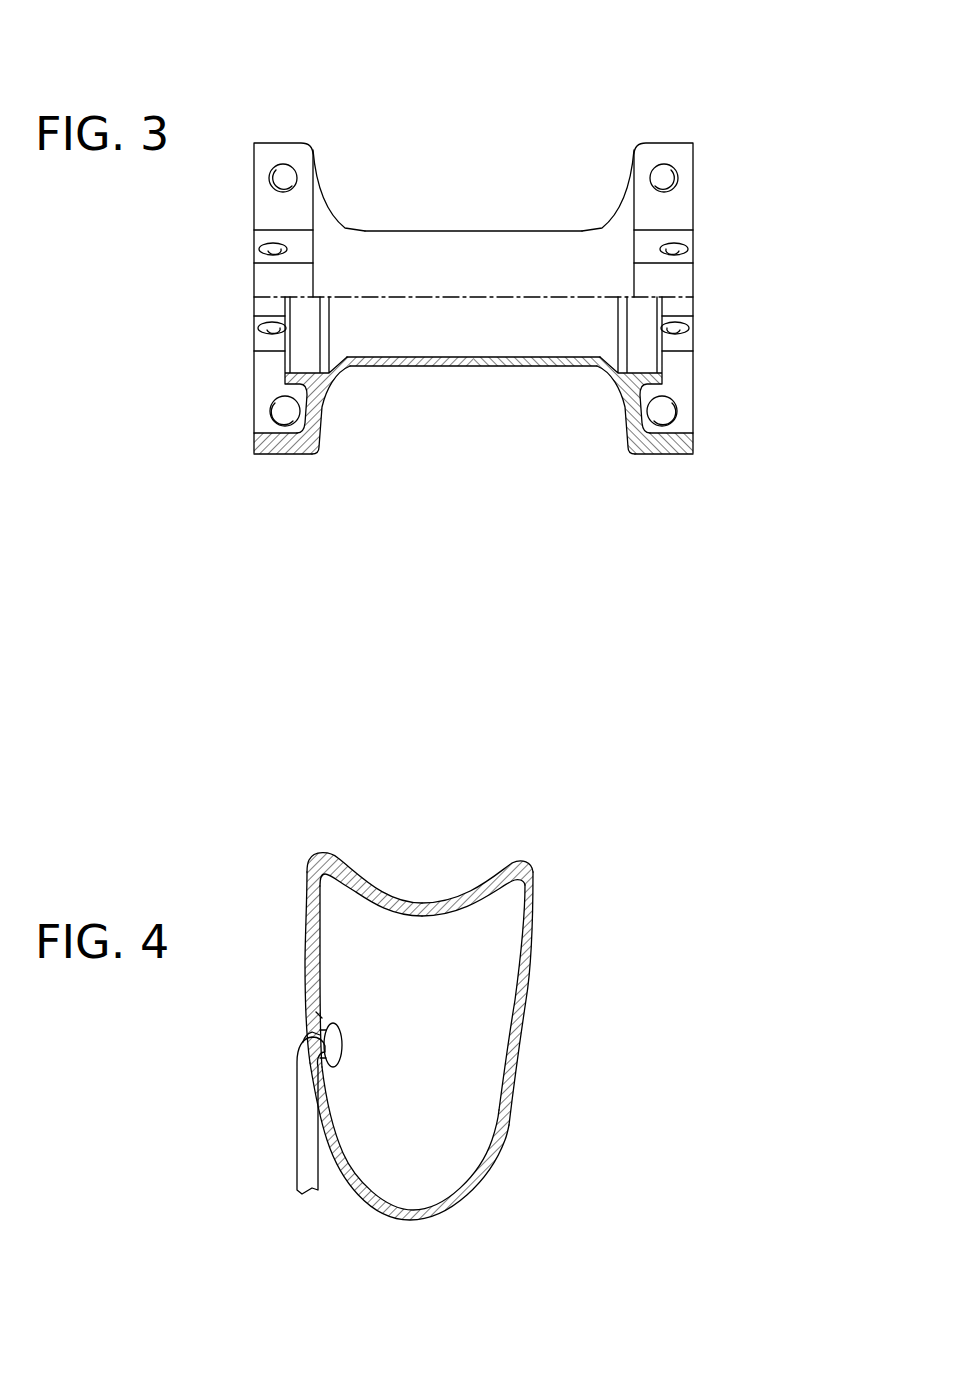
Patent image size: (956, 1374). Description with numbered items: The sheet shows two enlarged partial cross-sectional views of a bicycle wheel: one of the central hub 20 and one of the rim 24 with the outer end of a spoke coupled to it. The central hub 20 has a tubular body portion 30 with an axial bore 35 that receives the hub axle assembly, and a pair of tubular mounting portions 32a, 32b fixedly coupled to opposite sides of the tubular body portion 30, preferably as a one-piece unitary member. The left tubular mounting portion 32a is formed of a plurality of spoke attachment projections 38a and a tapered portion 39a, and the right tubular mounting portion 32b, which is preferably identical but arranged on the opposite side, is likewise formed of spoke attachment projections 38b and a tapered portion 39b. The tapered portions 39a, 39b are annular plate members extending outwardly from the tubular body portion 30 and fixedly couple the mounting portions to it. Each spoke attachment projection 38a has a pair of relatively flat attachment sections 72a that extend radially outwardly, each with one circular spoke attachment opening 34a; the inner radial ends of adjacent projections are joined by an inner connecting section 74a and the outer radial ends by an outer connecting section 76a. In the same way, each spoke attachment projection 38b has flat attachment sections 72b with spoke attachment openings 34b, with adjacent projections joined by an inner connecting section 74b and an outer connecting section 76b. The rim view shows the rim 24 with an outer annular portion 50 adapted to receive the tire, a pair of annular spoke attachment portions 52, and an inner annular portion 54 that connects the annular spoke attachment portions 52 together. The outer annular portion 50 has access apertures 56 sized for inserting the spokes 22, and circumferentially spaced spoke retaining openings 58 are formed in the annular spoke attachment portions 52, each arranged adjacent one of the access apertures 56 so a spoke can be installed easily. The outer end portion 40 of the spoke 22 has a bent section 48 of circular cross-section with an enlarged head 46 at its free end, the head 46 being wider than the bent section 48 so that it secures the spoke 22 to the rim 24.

In FIG. 3, the central hub 20 is at (472, 284).
In FIG. 3, the tubular body portion 30 is at (464, 226).
In FIG. 3, the left tubular mounting portion 32a is at (292, 468).
In FIG. 3, the right tubular mounting portion 32b is at (669, 470).
In FIG. 3, the spoke attachment openings 34a is at (252, 297).
In FIG. 3, the spoke attachment openings 34b is at (695, 297).
In FIG. 3, the axial bore 35 is at (450, 357).
In FIG. 3, the spoke attachment projections 38a is at (243, 242).
In FIG. 3, the spoke attachment projections 38b is at (700, 243).
In FIG. 3, the tapered portion 39a is at (340, 216).
In FIG. 3, the tapered portion 39b is at (610, 216).
In FIG. 3, the attachment sections 72a is at (303, 247).
In FIG. 3, the attachment sections 72b is at (644, 247).
In FIG. 3, the inner connecting section 74a is at (307, 222).
In FIG. 3, the inner connecting section 74b is at (640, 222).
In FIG. 3, the outer connecting section 76a is at (303, 277).
In FIG. 3, the outer connecting section 76b is at (644, 277).
In FIG. 4, the spokes 22 is at (304, 1078).
In FIG. 4, the rim 24 is at (451, 1026).
In FIG. 4, the outer end portion 40 is at (296, 1093).
In FIG. 4, the enlarged head 46 is at (343, 1032).
In FIG. 4, the bent section 48 is at (284, 1040).
In FIG. 4, the outer annular portion 50 is at (476, 882).
In FIG. 4, the annular spoke attachment portions 52 is at (305, 983).
In FIG. 4, the inner annular portion 54 is at (411, 1221).
In FIG. 4, the access apertures 56 is at (414, 900).
In FIG. 4, the spoke retaining openings 58 is at (322, 1013).